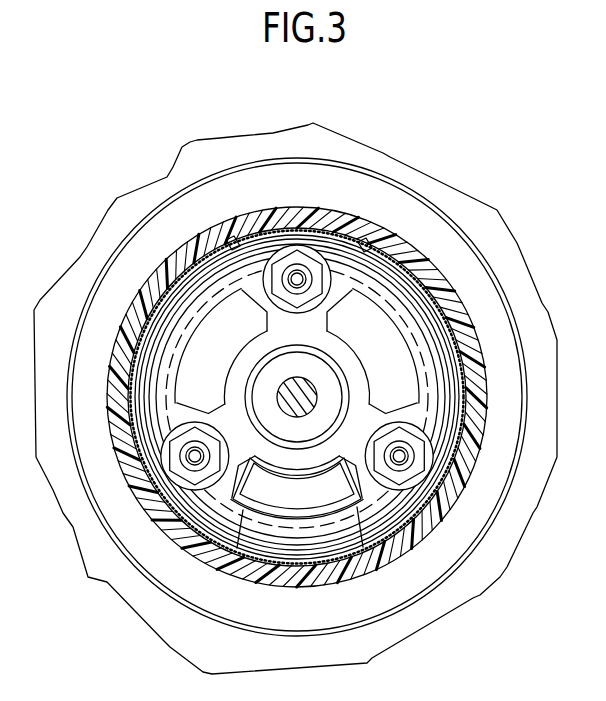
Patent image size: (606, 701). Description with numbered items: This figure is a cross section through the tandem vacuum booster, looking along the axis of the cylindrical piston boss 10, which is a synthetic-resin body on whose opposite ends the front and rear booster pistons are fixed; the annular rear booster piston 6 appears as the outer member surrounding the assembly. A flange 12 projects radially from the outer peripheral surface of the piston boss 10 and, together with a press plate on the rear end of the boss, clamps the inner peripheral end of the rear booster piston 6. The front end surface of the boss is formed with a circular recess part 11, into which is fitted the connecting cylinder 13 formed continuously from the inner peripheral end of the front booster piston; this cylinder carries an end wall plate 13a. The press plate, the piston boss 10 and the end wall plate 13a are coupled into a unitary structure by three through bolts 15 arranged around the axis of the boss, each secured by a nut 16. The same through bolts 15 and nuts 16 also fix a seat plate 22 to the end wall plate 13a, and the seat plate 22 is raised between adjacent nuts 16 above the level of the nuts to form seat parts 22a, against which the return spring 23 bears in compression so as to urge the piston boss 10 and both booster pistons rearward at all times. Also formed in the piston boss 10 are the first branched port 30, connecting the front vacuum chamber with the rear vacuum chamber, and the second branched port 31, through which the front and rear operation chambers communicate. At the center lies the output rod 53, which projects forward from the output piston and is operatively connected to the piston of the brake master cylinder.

The rear booster piston 6 is at (357, 157).
The flange 12 is at (386, 190).
The piston boss 10 is at (281, 220).
The circular recess part 11 is at (231, 243).
The connecting cylinder 13 is at (364, 247).
The end wall plate 13a is at (297, 487).
The through bolts 15 is at (306, 252).
The nuts 16 is at (327, 268).
The seat plate 22 is at (220, 502).
The seat parts 22a is at (167, 323).
The return spring 23 is at (402, 458).
The first branched port 30 is at (272, 511).
The second branched port 31 is at (174, 284).
The output rod 53 is at (300, 412).